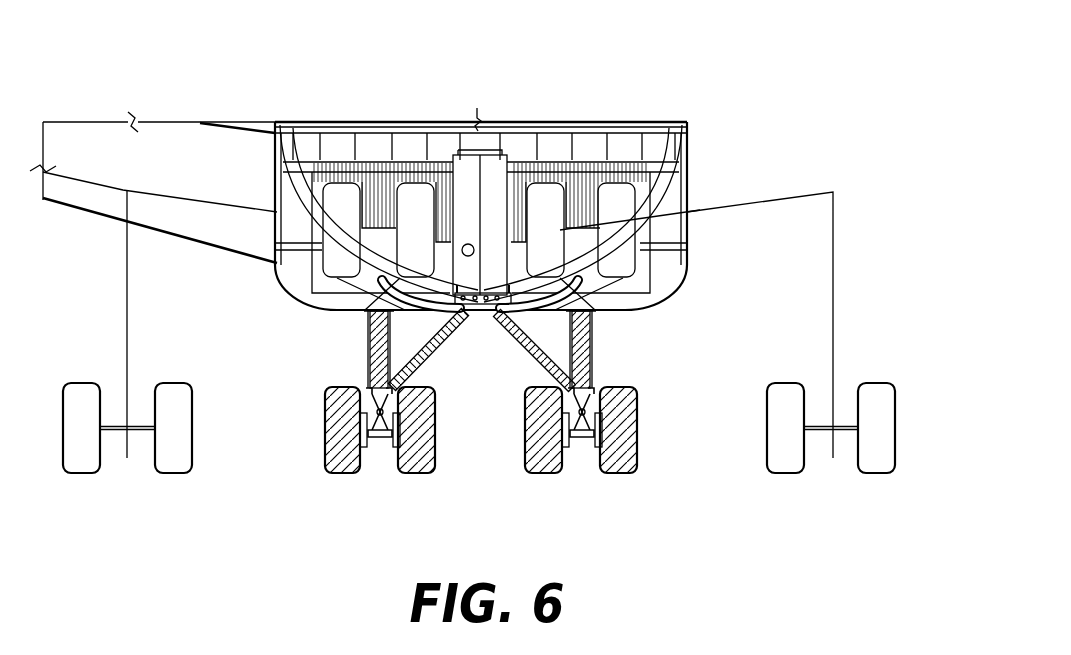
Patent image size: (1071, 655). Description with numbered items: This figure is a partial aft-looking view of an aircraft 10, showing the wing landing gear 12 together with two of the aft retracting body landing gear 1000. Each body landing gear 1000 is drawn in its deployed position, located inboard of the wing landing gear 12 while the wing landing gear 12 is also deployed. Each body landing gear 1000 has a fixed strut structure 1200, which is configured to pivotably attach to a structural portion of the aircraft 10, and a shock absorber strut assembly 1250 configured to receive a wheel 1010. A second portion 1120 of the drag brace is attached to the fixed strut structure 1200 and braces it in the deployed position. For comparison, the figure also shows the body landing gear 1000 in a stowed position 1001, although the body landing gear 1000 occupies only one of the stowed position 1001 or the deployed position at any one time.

The aircraft 10 is at (462, 274).
The wing landing gear 12 is at (168, 460).
The body landing gear 1000 is at (482, 424).
The stowed position 1001 is at (343, 197).
The wheel 1010 is at (347, 460).
The second portion 1120 is at (437, 342).
The fixed strut structure 1200 is at (369, 358).
The shock absorber strut assembly 1250 is at (369, 372).